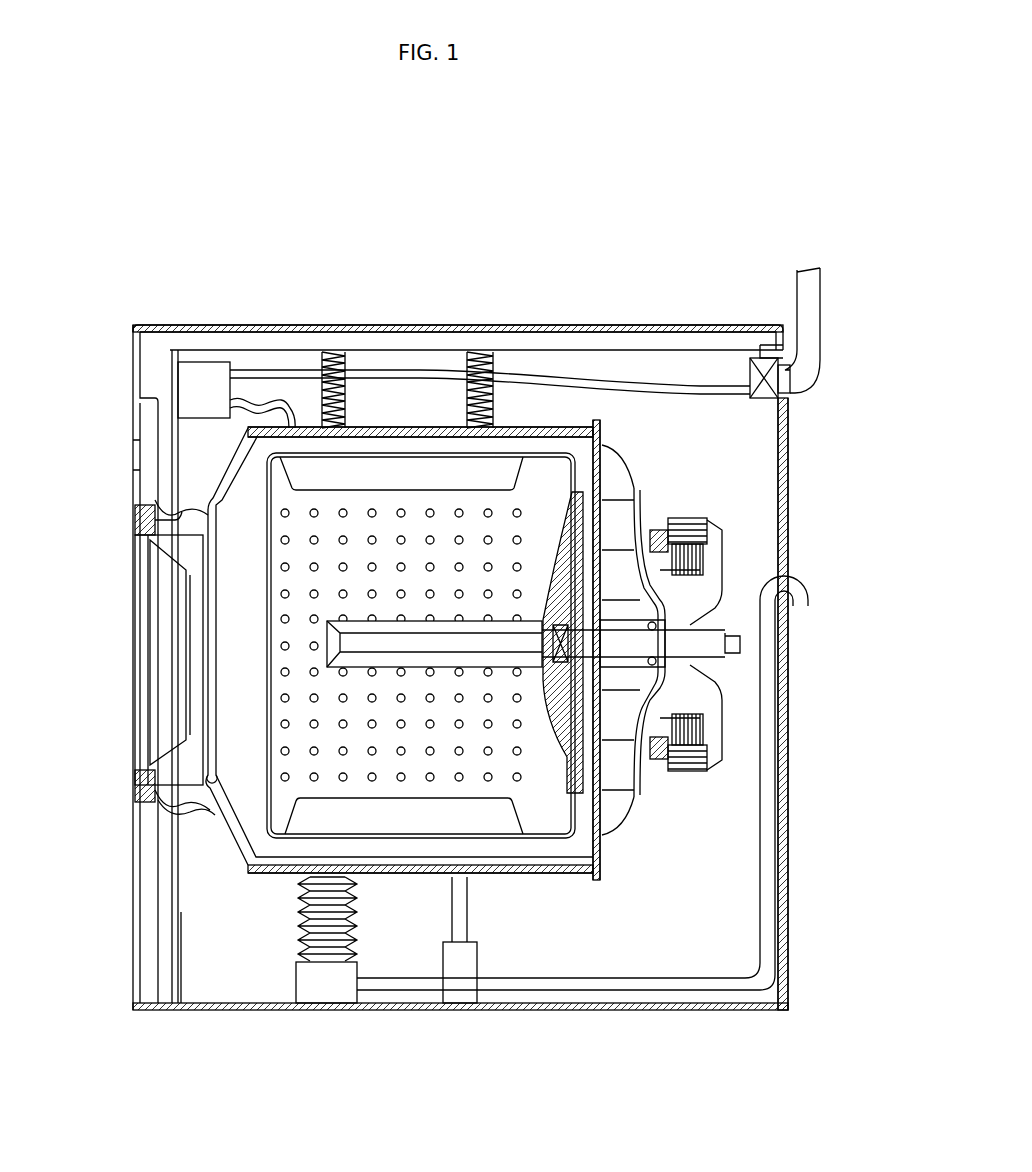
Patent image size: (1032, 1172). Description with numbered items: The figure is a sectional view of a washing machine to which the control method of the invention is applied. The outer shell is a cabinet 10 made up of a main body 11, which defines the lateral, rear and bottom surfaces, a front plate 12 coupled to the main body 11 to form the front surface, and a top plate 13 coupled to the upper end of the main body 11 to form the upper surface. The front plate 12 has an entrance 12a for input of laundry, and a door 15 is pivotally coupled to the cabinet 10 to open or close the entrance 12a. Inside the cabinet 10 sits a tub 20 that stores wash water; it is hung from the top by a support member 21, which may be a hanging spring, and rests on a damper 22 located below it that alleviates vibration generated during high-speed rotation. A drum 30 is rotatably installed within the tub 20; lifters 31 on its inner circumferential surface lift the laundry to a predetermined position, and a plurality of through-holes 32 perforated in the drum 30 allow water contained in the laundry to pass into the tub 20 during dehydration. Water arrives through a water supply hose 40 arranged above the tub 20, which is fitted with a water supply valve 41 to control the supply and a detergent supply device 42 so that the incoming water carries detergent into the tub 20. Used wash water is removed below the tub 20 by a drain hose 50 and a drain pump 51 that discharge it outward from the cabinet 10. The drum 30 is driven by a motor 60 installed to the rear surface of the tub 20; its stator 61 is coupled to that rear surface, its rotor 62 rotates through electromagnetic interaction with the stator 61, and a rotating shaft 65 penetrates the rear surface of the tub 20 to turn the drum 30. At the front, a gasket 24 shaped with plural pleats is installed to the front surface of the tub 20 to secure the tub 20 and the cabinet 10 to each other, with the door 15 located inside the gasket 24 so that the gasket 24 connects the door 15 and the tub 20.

The cabinet 10 is at (532, 322).
The main body 11 is at (690, 1010).
The front plate 12 is at (135, 915).
The entrance 12a is at (175, 530).
The top plate 13 is at (405, 325).
The door 15 is at (140, 640).
The tub 20 is at (570, 872).
The support member 21 is at (333, 355).
The damper 22 is at (460, 910).
The gasket 24 is at (160, 800).
The drum 30 is at (575, 808).
The lifters 31 is at (300, 815).
The through-holes 32 is at (283, 698).
The water supply hose 40 is at (657, 383).
The water supply valve 41 is at (780, 380).
The detergent supply device 42 is at (205, 365).
The drain hose 50 is at (395, 985).
The drain pump 51 is at (325, 985).
The motor 60 is at (855, 515).
The stator 61 is at (720, 562).
The rotor 62 is at (715, 525).
The rotating shaft 65 is at (655, 640).